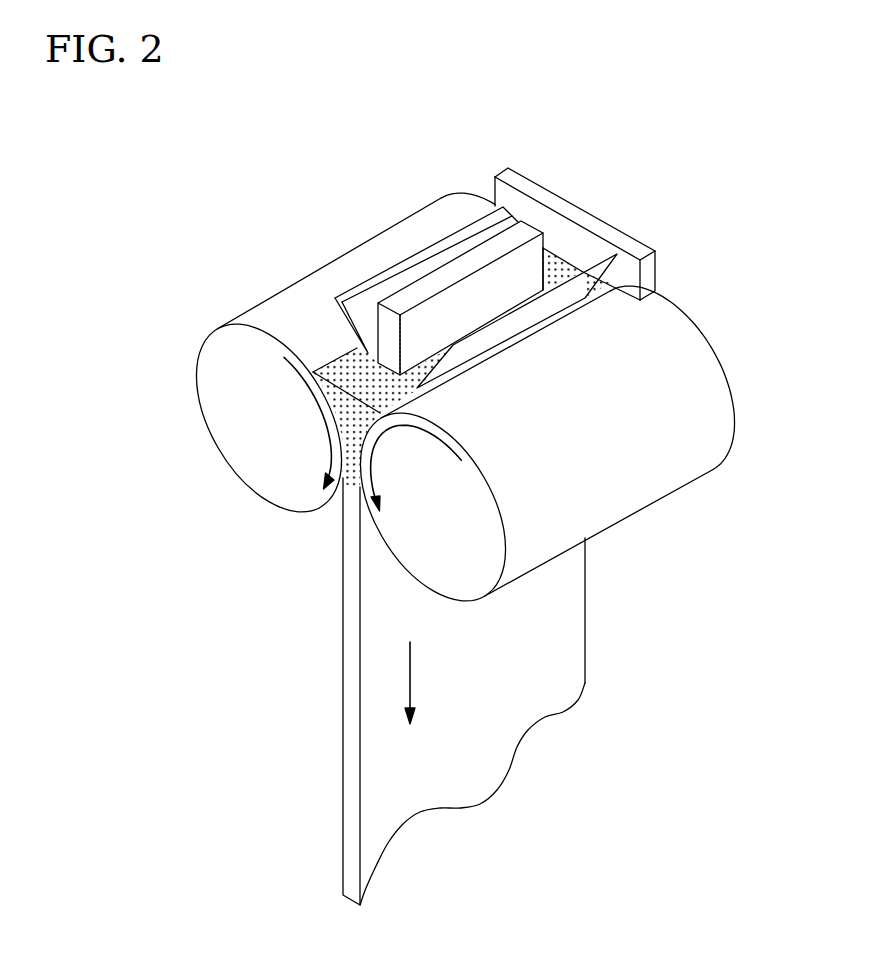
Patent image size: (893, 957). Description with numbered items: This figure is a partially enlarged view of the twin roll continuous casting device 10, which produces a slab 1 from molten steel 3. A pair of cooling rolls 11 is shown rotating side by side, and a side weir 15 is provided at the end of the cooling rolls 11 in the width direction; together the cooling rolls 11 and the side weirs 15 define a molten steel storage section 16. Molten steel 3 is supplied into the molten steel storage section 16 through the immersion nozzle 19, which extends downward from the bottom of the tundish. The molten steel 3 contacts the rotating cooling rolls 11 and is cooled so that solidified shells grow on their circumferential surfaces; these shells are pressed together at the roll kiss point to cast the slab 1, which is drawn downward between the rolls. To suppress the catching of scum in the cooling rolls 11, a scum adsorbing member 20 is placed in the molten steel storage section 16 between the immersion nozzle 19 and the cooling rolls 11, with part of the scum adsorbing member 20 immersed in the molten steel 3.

The slab 1 is at (393, 697).
The molten steel 3 is at (346, 373).
The twin roll continuous casting device 10 is at (180, 172).
The cooling roll 11 is at (222, 427).
The side weir 15 is at (572, 208).
The molten steel storage section 16 is at (548, 240).
The immersion nozzle 19 is at (492, 248).
The scum adsorbing member 20 is at (435, 252).